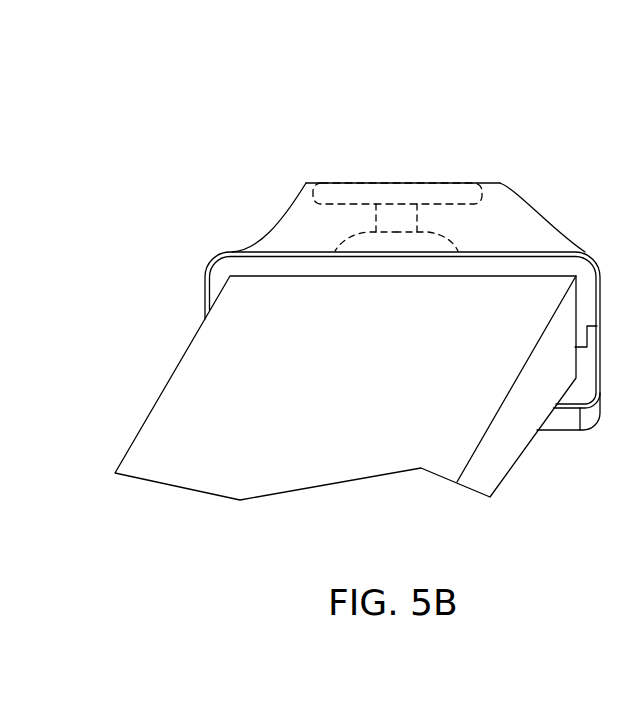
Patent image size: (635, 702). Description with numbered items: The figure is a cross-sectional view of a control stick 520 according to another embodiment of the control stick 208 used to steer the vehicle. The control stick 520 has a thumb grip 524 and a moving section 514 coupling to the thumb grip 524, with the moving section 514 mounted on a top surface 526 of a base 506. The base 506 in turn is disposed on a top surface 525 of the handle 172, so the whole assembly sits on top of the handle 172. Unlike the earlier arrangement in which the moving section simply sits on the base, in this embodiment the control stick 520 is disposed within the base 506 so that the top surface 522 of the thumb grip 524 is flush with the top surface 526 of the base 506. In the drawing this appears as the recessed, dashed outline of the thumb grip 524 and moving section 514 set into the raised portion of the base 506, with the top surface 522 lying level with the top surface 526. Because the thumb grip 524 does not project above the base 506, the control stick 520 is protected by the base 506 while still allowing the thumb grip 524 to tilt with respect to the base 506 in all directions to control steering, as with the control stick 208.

The handle 172 is at (200, 392).
The control stick 208 is at (380, 158).
The base 506 is at (277, 240).
The moving section 514 is at (430, 241).
The control stick 520 is at (491, 190).
The top surface of the thumb grip 522 is at (435, 182).
The thumb grip 524 is at (368, 196).
The top surface of the handle 525 is at (525, 277).
The top surface of the base 526 is at (310, 183).